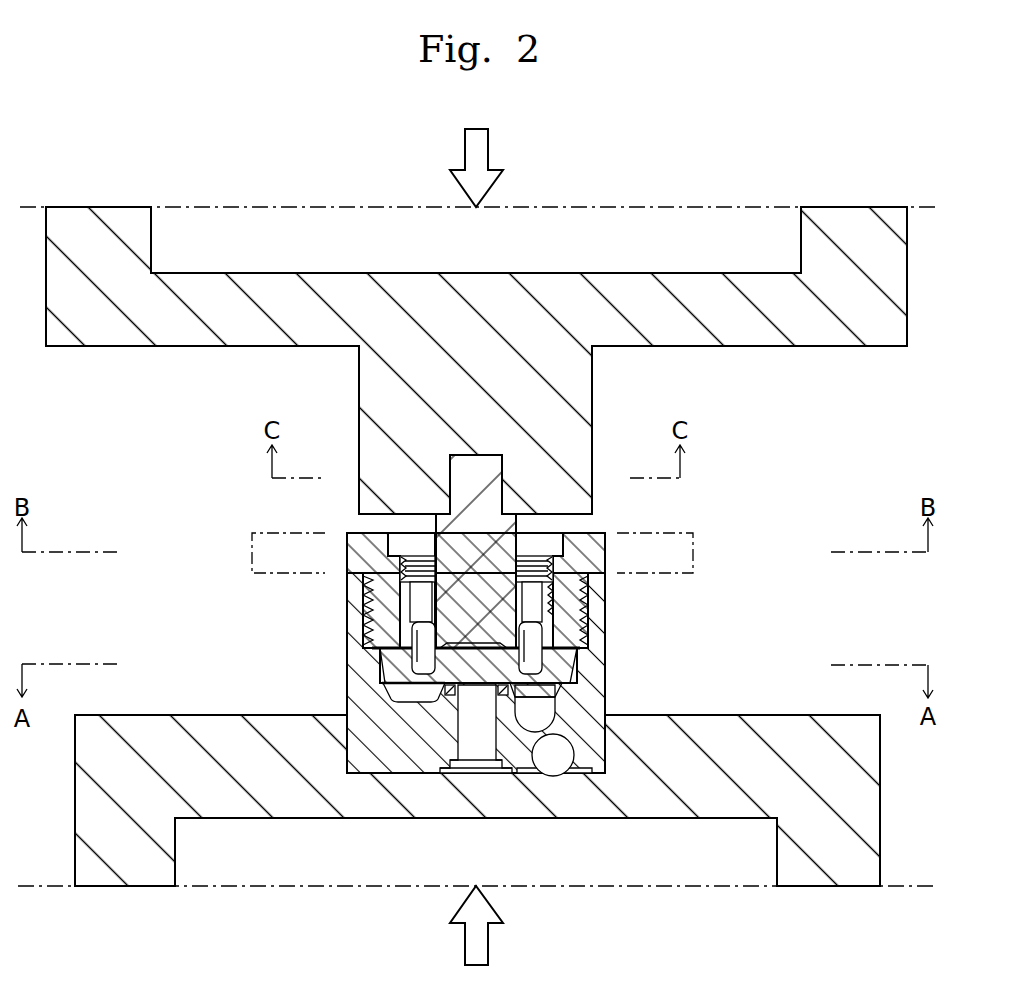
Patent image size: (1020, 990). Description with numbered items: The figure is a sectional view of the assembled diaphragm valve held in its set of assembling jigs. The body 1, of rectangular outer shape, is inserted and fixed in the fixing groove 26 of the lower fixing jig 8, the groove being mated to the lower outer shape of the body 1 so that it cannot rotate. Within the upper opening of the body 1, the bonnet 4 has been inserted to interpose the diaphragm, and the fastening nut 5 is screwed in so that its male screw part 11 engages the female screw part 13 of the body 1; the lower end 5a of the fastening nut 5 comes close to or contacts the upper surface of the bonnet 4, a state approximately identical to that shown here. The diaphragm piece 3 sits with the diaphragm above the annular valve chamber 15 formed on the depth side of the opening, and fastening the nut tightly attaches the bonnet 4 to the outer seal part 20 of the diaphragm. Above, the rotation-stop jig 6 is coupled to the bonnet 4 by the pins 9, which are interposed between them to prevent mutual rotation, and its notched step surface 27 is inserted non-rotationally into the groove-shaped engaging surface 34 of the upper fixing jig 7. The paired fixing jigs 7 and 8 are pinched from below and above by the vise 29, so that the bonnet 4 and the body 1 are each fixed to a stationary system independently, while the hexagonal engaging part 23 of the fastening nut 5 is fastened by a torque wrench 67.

The body 1 is at (373, 757).
The diaphragm piece 3 is at (580, 615).
The bonnet 4 is at (410, 648).
The fastening nut 5 is at (592, 558).
The lower end 5a is at (577, 652).
The rotation-stop jig 6 is at (470, 552).
The fixing jig 7 is at (100, 228).
The fixing jig 8 is at (130, 853).
The pin 9 is at (410, 635).
The male screw part 11 is at (580, 586).
The female screw part 13 is at (367, 585).
The valve chamber 15 is at (403, 690).
The outer seal part 20 is at (573, 673).
The engaging part 23 is at (347, 548).
The fixing groove 26 is at (598, 700).
The notched step surface 27 is at (458, 517).
The vise 29 is at (712, 207).
The engaging surface 34 is at (437, 525).
The torque wrench 67 is at (682, 548).